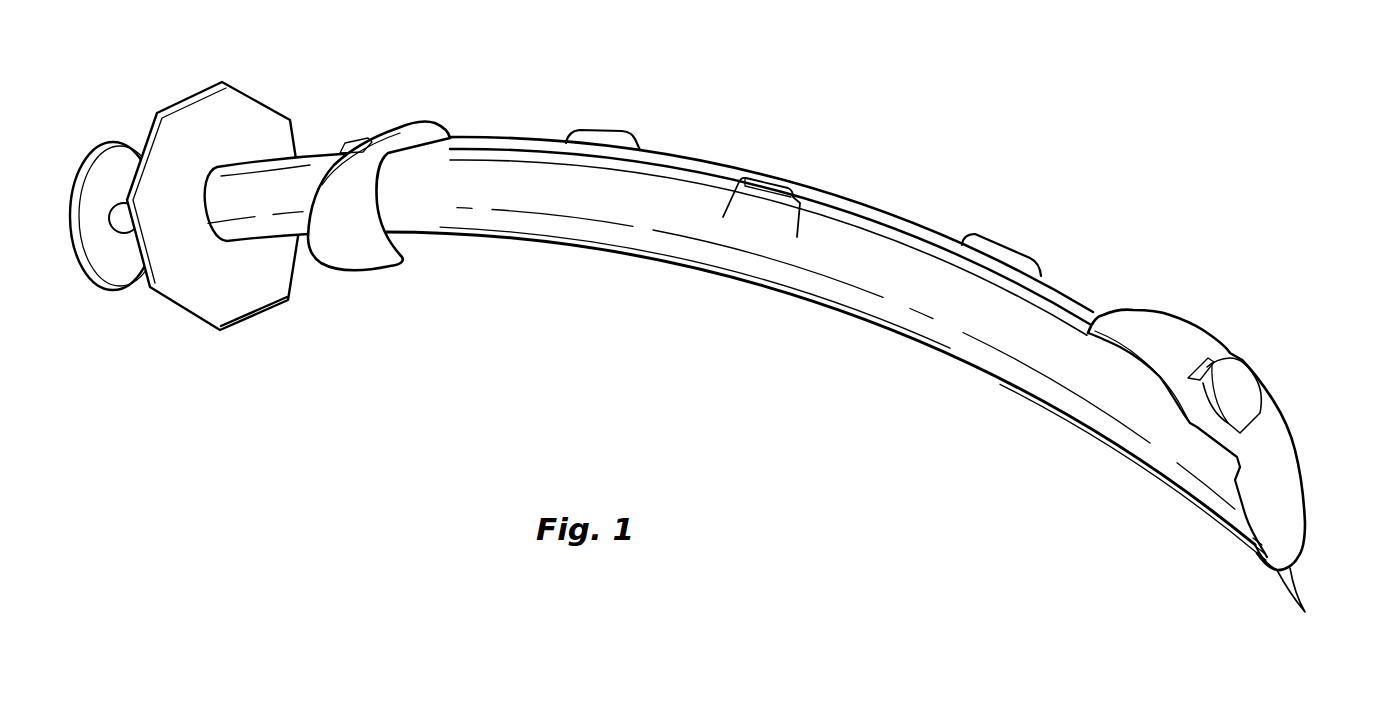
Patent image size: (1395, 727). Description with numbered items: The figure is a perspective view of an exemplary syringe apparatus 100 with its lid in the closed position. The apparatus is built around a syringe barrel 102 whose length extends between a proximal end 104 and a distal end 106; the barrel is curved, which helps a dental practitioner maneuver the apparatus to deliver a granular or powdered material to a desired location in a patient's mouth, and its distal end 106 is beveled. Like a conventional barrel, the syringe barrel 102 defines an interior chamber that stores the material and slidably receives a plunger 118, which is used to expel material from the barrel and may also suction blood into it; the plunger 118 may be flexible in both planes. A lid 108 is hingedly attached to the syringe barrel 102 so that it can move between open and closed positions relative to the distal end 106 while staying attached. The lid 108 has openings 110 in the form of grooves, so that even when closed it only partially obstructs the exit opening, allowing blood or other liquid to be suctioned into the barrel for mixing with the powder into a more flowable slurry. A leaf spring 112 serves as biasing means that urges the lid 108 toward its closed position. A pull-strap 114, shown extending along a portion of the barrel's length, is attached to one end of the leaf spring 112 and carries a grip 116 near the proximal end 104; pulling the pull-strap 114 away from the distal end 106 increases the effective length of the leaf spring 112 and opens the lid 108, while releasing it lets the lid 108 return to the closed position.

The syringe apparatus 100 is at (795, 124).
The syringe barrel 102 is at (622, 208).
The proximal end 104 is at (277, 337).
The distal end 106 is at (1203, 550).
The lid 108 is at (1287, 503).
The openings 110 is at (1305, 612).
The leaf spring 112 is at (1167, 333).
The pull-strap 114 is at (532, 145).
The grip 116 is at (423, 130).
The plunger 118 is at (122, 218).